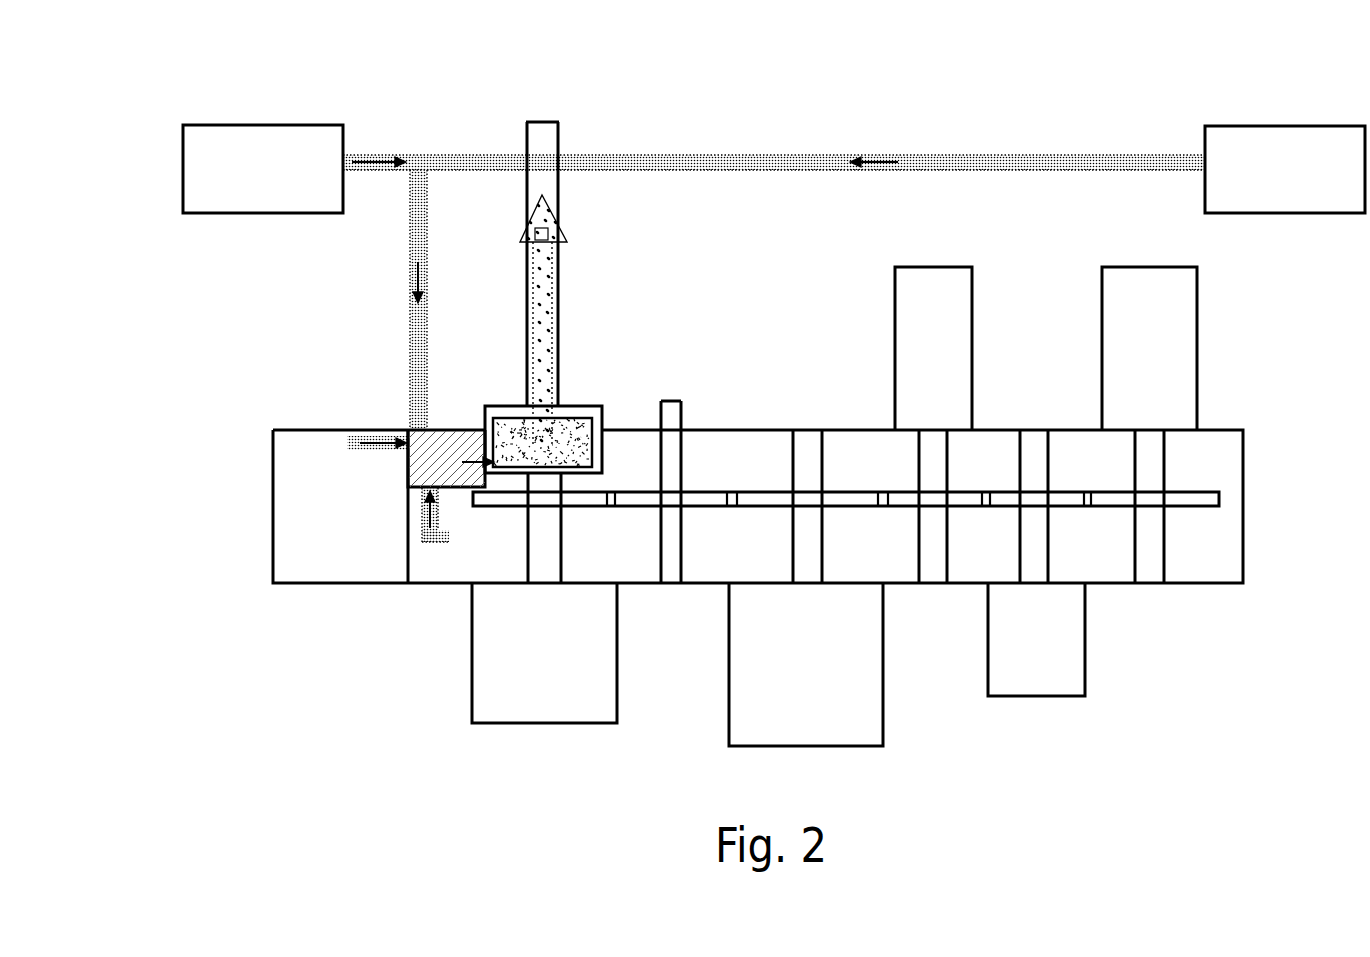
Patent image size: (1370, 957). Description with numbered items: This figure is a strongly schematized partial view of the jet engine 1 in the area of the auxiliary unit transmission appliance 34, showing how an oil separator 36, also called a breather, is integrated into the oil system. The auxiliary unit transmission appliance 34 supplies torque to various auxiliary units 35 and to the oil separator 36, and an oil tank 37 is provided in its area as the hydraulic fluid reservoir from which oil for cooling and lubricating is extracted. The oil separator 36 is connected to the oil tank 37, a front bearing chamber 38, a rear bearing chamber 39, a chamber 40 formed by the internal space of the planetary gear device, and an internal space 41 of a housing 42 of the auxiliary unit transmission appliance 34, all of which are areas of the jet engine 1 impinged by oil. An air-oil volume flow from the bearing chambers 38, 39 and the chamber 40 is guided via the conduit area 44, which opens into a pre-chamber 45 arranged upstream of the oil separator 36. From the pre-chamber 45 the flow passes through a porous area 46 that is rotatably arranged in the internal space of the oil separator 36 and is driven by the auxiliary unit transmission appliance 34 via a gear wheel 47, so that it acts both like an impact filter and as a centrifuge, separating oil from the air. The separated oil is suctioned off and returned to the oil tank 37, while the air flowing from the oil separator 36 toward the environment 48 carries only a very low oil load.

The jet engine 1 is at (152, 212).
The auxiliary unit transmission appliance 34 is at (1128, 606).
The auxiliary units 35 is at (1025, 706).
The oil separator 36 is at (578, 383).
The oil tank 37 is at (283, 546).
The front bearing chamber 38 is at (277, 140).
The rear bearing chamber 39 is at (316, 140).
The chamber 40 is at (1273, 155).
The internal space 41 is at (767, 465).
The housing 42 is at (1246, 494).
The conduit area 44 is at (413, 232).
The pre-chamber 45 is at (443, 443).
The porous area 46 is at (590, 447).
The gear wheel 47 is at (478, 508).
The environment 48 is at (558, 89).